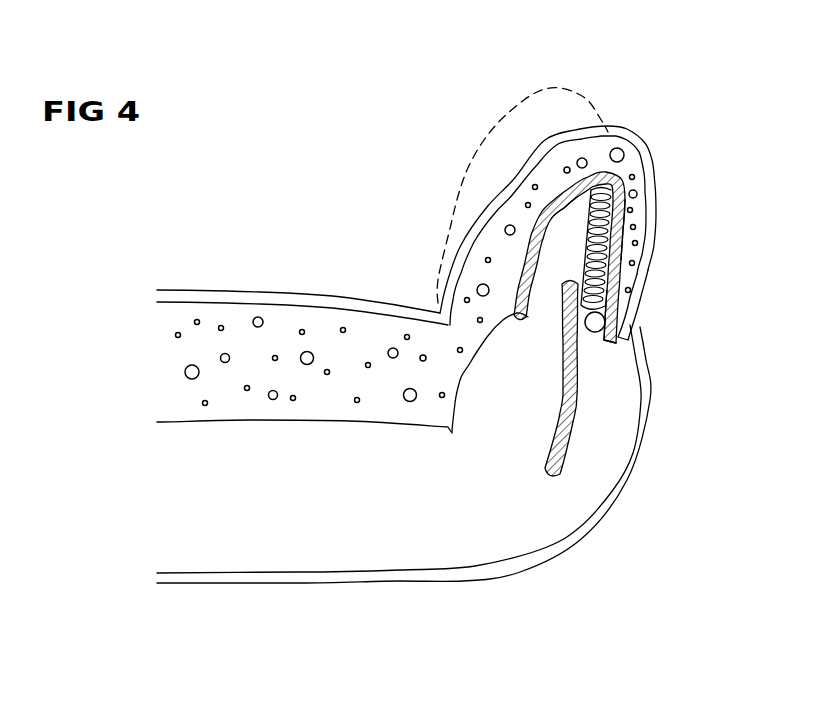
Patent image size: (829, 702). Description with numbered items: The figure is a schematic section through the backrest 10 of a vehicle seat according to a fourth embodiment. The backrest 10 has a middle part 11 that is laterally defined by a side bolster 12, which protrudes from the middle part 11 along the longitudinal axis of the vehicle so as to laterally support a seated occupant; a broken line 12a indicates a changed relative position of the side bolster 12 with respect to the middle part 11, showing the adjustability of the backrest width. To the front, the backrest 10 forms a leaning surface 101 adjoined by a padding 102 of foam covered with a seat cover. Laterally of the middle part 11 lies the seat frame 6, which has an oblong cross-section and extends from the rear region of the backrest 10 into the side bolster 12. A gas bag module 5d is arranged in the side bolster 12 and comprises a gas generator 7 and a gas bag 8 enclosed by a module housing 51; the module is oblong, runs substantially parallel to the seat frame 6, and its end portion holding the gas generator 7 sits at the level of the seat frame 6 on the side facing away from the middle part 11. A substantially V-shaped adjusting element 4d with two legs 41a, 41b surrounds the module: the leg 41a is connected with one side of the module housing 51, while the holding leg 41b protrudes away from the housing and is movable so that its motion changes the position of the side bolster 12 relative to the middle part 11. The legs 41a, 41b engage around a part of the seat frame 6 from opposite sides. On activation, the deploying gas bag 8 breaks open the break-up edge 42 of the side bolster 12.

The adjusting element 4d is at (533, 227).
The gas bag module 5d is at (620, 302).
The seat frame 6 is at (571, 456).
The gas generator 7 is at (633, 312).
The gas bag 8 is at (605, 275).
The backrest 10 is at (578, 550).
The middle part 11 is at (208, 288).
The side bolster 12 is at (653, 288).
The broken line 12a is at (540, 87).
The leg 41a is at (622, 225).
The holding leg 41b is at (557, 198).
The break-up edge 42 is at (618, 175).
The module housing 51 is at (636, 243).
The leaning surface 101 is at (266, 300).
The padding 102 is at (187, 352).